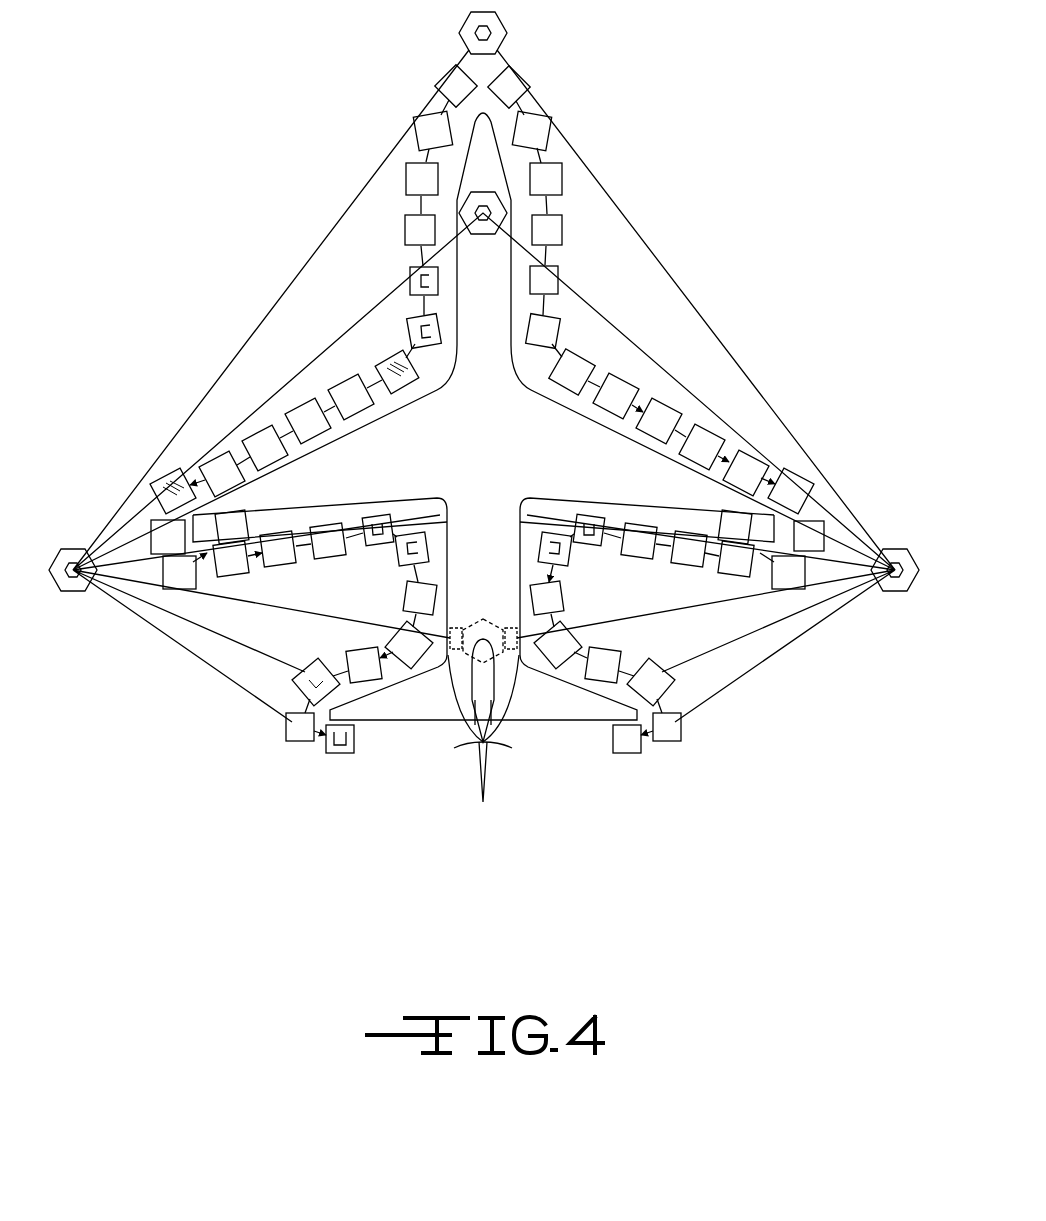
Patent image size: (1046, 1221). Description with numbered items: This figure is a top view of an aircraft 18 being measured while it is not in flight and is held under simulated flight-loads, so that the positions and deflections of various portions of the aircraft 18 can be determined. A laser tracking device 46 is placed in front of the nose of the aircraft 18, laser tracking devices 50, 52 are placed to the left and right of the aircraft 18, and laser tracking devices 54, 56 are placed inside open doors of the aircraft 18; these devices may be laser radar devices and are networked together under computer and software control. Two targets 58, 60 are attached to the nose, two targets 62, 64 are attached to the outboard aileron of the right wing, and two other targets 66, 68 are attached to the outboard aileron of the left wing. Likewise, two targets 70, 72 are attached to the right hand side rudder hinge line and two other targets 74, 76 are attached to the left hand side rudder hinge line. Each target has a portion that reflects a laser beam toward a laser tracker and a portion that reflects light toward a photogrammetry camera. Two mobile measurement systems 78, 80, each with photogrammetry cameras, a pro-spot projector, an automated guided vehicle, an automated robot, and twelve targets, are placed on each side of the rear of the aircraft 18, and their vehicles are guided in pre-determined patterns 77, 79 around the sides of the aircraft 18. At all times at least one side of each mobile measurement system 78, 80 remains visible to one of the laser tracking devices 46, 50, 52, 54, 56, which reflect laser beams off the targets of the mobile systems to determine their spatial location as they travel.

The aircraft 18 is at (498, 335).
The laser tracking device 46 is at (507, 33).
The laser tracking device 50 is at (62, 548).
The laser tracking device 52 is at (885, 548).
The laser tracking device 54 is at (507, 213).
The laser tracking device 56 is at (530, 608).
The target 58 is at (475, 116).
The target 60 is at (492, 117).
The target 62 is at (709, 513).
The target 64 is at (772, 492).
The target 66 is at (218, 527).
The target 68 is at (257, 521).
The target 70 is at (489, 746).
The target 72 is at (490, 744).
The target 74 is at (478, 746).
The target 76 is at (478, 742).
The pre-determined pattern 77 is at (333, 560).
The mobile measurement system 78 is at (330, 755).
The pre-determined pattern 79 is at (710, 562).
The mobile measurement system 80 is at (628, 755).